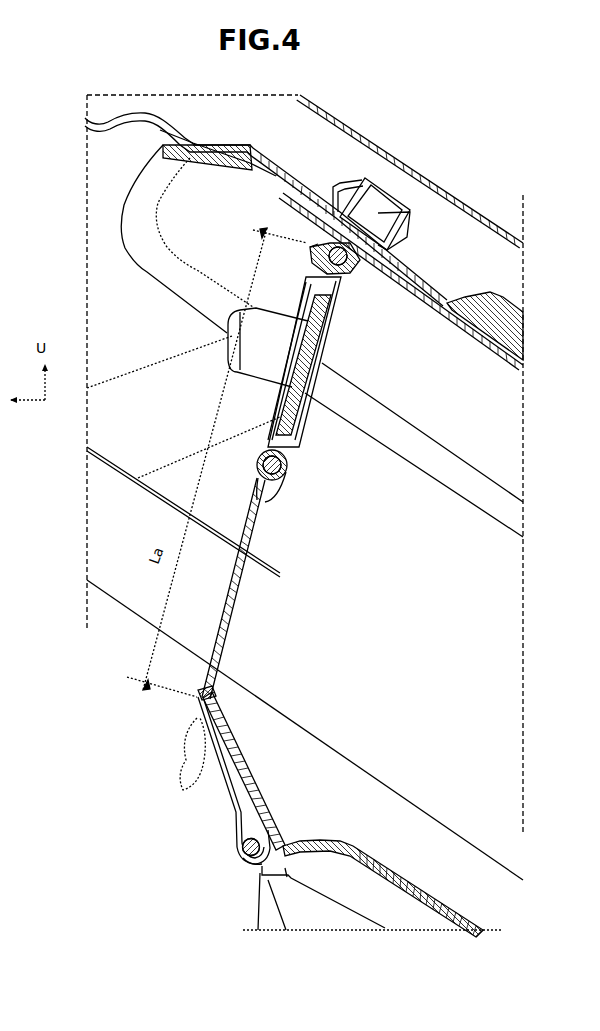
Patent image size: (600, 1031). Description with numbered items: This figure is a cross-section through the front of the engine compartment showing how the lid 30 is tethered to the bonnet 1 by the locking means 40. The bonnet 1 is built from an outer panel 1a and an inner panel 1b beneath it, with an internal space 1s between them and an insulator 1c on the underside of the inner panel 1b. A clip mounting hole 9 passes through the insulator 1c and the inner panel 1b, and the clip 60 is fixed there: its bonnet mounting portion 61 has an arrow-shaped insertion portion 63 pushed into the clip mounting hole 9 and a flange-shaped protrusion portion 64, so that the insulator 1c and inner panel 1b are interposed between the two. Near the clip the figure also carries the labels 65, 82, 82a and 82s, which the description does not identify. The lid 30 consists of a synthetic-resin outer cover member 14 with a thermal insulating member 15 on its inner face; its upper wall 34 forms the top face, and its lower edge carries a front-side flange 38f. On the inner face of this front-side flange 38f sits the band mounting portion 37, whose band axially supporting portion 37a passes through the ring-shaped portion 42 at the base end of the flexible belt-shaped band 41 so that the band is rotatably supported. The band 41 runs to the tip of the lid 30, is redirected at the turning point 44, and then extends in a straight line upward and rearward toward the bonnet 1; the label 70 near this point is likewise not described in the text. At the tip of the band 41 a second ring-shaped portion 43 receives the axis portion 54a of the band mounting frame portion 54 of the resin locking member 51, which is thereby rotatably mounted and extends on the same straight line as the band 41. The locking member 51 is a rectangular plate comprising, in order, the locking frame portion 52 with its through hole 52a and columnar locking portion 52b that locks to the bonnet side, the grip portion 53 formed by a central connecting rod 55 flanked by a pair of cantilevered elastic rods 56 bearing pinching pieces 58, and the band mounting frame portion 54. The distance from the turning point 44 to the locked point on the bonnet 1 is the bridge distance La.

The bonnet 1 is at (402, 142).
The outer panel 1a is at (350, 132).
The inner panel 1b is at (440, 301).
The insulator 1c is at (437, 487).
The internal space 1s is at (485, 266).
The clip mounting hole 9 is at (346, 197).
The outer cover member 14 is at (434, 904).
The thermal insulating member 15 is at (331, 904).
The lid 30 is at (321, 828).
The upper wall 34 is at (376, 921).
The band mounting portion 37 is at (230, 850).
The band axially supporting portion 37a is at (245, 857).
The front-side flange 38f is at (222, 753).
The locking means 40 is at (378, 390).
The band 41 is at (232, 596).
The ring-shaped portion 42 is at (235, 828).
The ring-shaped portion 43 is at (271, 493).
The turning point 44 is at (200, 692).
The locking member 51 is at (336, 362).
The locking frame portion 52 is at (392, 296).
The through hole 52a is at (341, 294).
The locking portion 52b is at (357, 276).
The grip portion 53 is at (316, 381).
The band mounting frame portion 54 is at (290, 463).
The axis portion 54a is at (286, 474).
The connecting rod 55 is at (329, 344).
The elastic rods 56 is at (308, 414).
The pinching piece 58 is at (229, 358).
The clip 60 is at (422, 203).
The bonnet mounting portion 61 is at (418, 233).
The insertion portion 63 is at (390, 188).
The protrusion portion 64 is at (398, 275).
The fastening portion 65 is at (317, 242).
The cable 70 is at (190, 748).
The pivot pin 82 is at (316, 276).
The pin bracket 82a is at (312, 252).
The pin support 82s is at (343, 229).